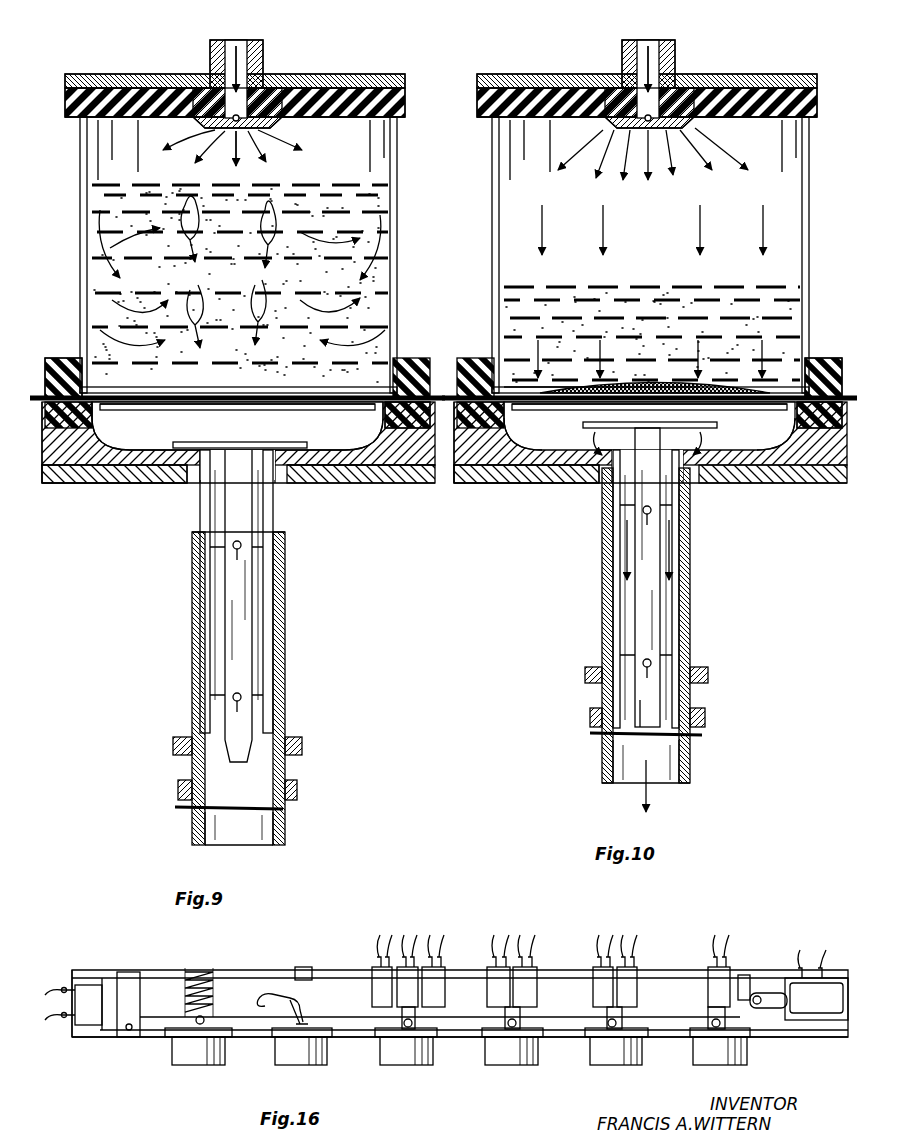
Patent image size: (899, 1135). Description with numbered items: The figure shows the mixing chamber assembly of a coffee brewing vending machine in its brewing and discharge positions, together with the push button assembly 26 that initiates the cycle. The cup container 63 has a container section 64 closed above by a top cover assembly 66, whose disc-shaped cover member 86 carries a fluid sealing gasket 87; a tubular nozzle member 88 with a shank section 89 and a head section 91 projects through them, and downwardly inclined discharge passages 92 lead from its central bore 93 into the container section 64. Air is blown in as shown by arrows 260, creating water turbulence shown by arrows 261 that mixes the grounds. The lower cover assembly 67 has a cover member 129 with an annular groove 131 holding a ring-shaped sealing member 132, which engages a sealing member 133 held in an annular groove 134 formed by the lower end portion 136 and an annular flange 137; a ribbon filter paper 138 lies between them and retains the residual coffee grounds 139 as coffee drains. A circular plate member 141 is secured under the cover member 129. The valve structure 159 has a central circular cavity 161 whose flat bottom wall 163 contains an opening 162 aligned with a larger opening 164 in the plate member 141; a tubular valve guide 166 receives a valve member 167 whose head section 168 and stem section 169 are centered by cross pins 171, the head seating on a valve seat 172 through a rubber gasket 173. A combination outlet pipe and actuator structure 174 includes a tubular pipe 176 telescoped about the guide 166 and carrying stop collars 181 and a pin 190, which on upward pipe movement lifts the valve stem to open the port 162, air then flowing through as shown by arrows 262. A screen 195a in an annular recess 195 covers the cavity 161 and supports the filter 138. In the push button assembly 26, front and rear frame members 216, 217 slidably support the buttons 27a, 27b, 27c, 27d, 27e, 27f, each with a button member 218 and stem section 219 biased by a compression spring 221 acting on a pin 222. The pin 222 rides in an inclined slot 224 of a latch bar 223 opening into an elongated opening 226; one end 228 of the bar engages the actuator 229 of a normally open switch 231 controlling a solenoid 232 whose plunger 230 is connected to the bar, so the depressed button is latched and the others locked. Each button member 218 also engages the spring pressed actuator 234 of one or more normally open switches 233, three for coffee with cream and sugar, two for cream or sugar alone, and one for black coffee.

In FIG. 16, the push button assembly 26 is at (457, 942).
In FIG. 16, the control button 27a is at (195, 1055).
In FIG. 16, the control button 27b is at (295, 1055).
In FIG. 16, the push button 27c is at (405, 1055).
In FIG. 16, the push button 27d is at (500, 1055).
In FIG. 16, the push button 27e is at (620, 1058).
In FIG. 16, the push button 27f is at (718, 1058).
In FIG. 9, the cup container 63 is at (400, 178).
In FIG. 10, the cup container 63 is at (490, 222).
In FIG. 9, the container section 64 is at (396, 235).
In FIG. 10, the container section 64 is at (490, 292).
In FIG. 9, the top cover assembly 66 is at (330, 70).
In FIG. 10, the top cover assembly 66 is at (735, 70).
In FIG. 9, the lower cover assembly 67 is at (400, 488).
In FIG. 10, the lower cover assembly 67 is at (785, 490).
In FIG. 9, the cover member 86 is at (405, 77).
In FIG. 10, the cover member 86 is at (550, 76).
In FIG. 9, the fluid sealing gasket 87 is at (405, 108).
In FIG. 10, the fluid sealing gasket 87 is at (478, 113).
In FIG. 9, the tubular nozzle member 88 is at (263, 60).
In FIG. 10, the tubular nozzle member 88 is at (676, 75).
In FIG. 9, the shank section 89 is at (213, 42).
In FIG. 10, the shank section 89 is at (672, 42).
In FIG. 9, the head section 91 is at (192, 122).
In FIG. 10, the head section 91 is at (622, 130).
In FIG. 9, the discharge passages 92 is at (265, 135).
In FIG. 10, the discharge passages 92 is at (688, 135).
In FIG. 9, the central bore 93 is at (237, 42).
In FIG. 10, the central bore 93 is at (640, 42).
In FIG. 9, the cover member 129 is at (98, 457).
In FIG. 10, the cover member 129 is at (510, 457).
In FIG. 9, the annular groove 131 is at (52, 447).
In FIG. 10, the annular groove 131 is at (462, 447).
In FIG. 9, the sealing member 132 is at (432, 402).
In FIG. 10, the sealing member 132 is at (830, 440).
In FIG. 9, the sealing member 133 is at (420, 358).
In FIG. 10, the sealing member 133 is at (825, 358).
In FIG. 9, the annular groove 134 is at (70, 357).
In FIG. 10, the annular groove 134 is at (838, 402).
In FIG. 10, the lower end portion 136 is at (502, 390).
In FIG. 9, the annular flange 137 is at (52, 360).
In FIG. 10, the annular flange 137 is at (462, 360).
In FIG. 9, the filter paper 138 is at (45, 398).
In FIG. 10, the filter paper 138 is at (790, 396).
In FIG. 10, the residual coffee grounds 139 is at (630, 402).
In FIG. 9, the circular plate member 141 is at (325, 477).
In FIG. 9, the valve structure 159 is at (198, 522).
In FIG. 9, the central circular cavity 161 is at (302, 434).
In FIG. 10, the central circular cavity 161 is at (760, 462).
In FIG. 10, the opening 162 is at (690, 470).
In FIG. 10, the flat bottom wall 163 is at (590, 470).
In FIG. 9, the larger opening 164 is at (277, 485).
In FIG. 10, the larger opening 164 is at (600, 482).
In FIG. 9, the tubular valve guide 166 is at (280, 616).
In FIG. 10, the tubular valve guide 166 is at (690, 582).
In FIG. 10, the valve member 167 is at (655, 617).
In FIG. 9, the head section 168 is at (200, 443).
In FIG. 9, the stem section 169 is at (242, 660).
In FIG. 10, the stem section 169 is at (640, 714).
In FIG. 9, the cross pins 171 is at (178, 452).
In FIG. 10, the cross pins 171 is at (680, 512).
In FIG. 10, the valve seat 172 is at (700, 457).
In FIG. 9, the rubber gasket 173 is at (282, 470).
In FIG. 10, the rubber gasket 173 is at (575, 457).
In FIG. 9, the combination outlet pipe and actuator structure 174 is at (190, 703).
In FIG. 10, the combination outlet pipe and actuator structure 174 is at (600, 644).
In FIG. 9, the tubular pipe 176 is at (282, 837).
In FIG. 10, the tubular pipe 176 is at (695, 690).
In FIG. 9, the stop collars 181 is at (300, 744).
In FIG. 10, the stop collars 181 is at (588, 677).
In FIG. 9, the pin 190 is at (190, 810).
In FIG. 10, the pin 190 is at (698, 737).
In FIG. 9, the annular recess 195 is at (330, 462).
In FIG. 10, the annular recess 195 is at (765, 472).
In FIG. 9, the screen 195a is at (180, 406).
In FIG. 10, the screen 195a is at (680, 393).
In FIG. 16, the front frame member 216 is at (250, 972).
In FIG. 16, the rear frame member 217 is at (340, 1037).
In FIG. 16, the button member 218 is at (280, 1045).
In FIG. 16, the stem section 219 is at (302, 967).
In FIG. 16, the compression spring 221 is at (205, 980).
In FIG. 16, the pin 222 is at (196, 1022).
In FIG. 16, the latch bar 223 is at (745, 975).
In FIG. 16, the inclined slots 224 is at (300, 1020).
In FIG. 16, the longitudinally extended opening 226 is at (270, 997).
In FIG. 16, the end of latch bar 228 is at (125, 1037).
In FIG. 16, the actuator 229 is at (100, 985).
In FIG. 16, the plunger 230 is at (770, 993).
In FIG. 16, the normally open switch 231 is at (80, 1025).
In FIG. 16, the solenoid 232 is at (820, 995).
In FIG. 16, the normally open switches 233 is at (427, 957).
In FIG. 16, the spring pressed actuator 234 is at (520, 1015).
In FIG. 9, the arrows 260 is at (240, 173).
In FIG. 9, the arrows 261 is at (390, 315).
In FIG. 10, the arrows 262 is at (650, 438).